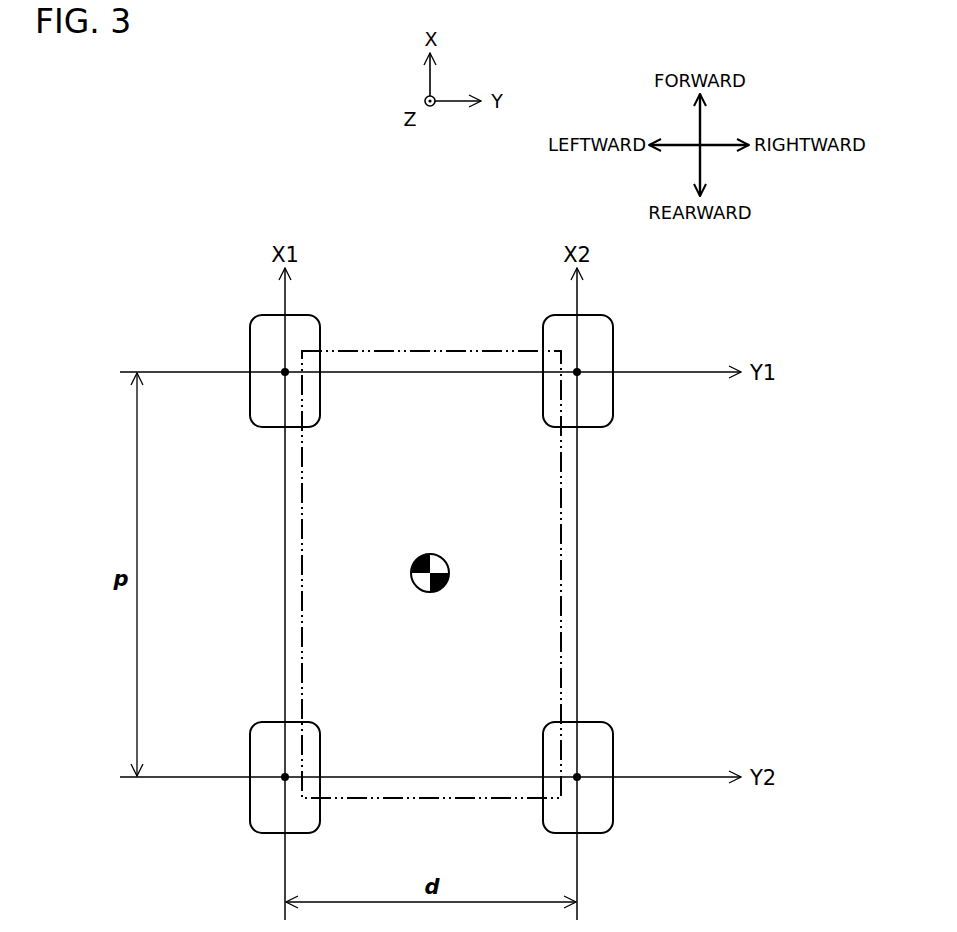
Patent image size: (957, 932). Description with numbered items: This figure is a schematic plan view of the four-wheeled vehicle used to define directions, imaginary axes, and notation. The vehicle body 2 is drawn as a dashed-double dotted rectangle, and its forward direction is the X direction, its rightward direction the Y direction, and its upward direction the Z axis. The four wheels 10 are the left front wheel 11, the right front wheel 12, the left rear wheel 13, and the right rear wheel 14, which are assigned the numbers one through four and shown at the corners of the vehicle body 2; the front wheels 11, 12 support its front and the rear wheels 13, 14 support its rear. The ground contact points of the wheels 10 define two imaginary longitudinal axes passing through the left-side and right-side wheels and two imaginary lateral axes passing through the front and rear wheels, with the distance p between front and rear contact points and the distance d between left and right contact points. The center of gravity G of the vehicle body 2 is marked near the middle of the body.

The vehicle body 2 is at (561, 585).
The wheels 10 is at (435, 578).
The left front wheel 11 is at (250, 347).
The right front wheel 12 is at (613, 347).
The left rear wheel 13 is at (250, 800).
The right rear wheel 14 is at (613, 800).
The center of gravity G is at (444, 559).